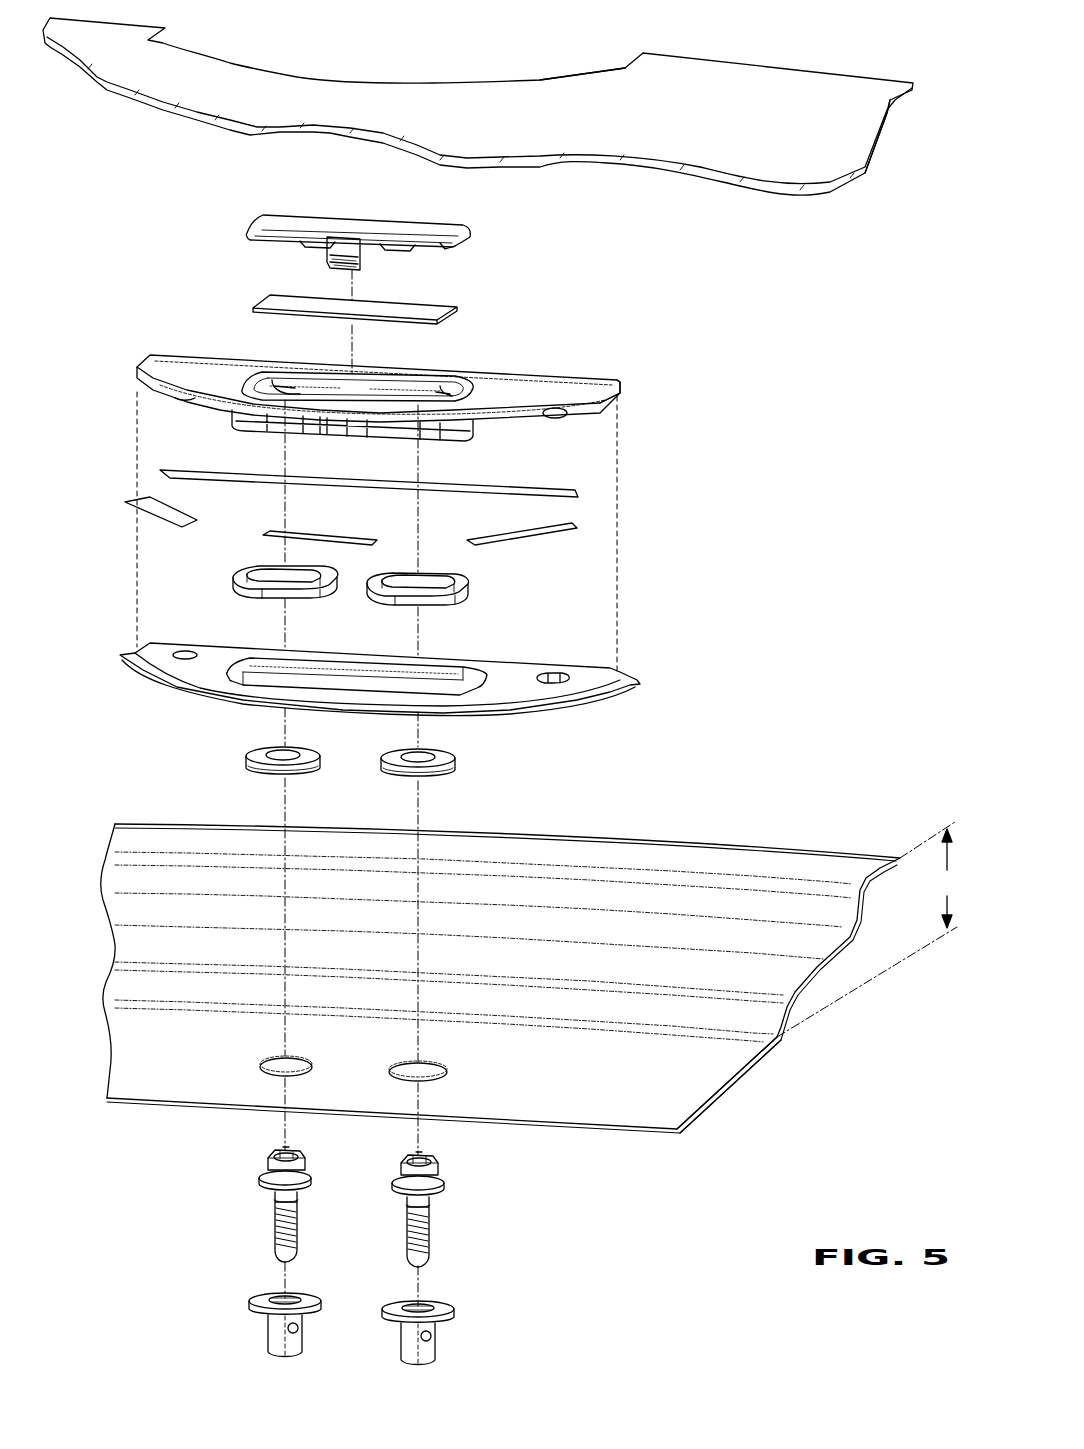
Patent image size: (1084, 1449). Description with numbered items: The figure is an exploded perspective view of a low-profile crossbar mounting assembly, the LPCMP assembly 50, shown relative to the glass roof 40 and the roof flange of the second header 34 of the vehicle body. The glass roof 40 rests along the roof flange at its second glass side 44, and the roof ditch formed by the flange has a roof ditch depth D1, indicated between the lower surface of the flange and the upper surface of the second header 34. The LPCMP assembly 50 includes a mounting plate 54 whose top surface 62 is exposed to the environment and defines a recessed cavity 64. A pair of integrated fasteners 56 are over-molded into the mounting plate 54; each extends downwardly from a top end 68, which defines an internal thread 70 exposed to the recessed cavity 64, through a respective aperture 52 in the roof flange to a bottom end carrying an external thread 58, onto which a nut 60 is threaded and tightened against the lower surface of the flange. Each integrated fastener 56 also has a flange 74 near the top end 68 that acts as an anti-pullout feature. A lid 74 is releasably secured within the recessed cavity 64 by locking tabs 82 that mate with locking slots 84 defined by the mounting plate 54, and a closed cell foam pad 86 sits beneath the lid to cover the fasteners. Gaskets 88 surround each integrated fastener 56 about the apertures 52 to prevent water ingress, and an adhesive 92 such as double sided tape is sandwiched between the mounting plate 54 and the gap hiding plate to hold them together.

The second header 34 is at (780, 857).
The glass roof 40 is at (712, 98).
The second glass side 44 is at (835, 70).
The LPCMP assembly 50 is at (662, 362).
The aperture 52 is at (262, 1067).
The mounting plate 54 is at (520, 372).
The integrated fastener 56 is at (274, 1215).
The external thread 58 is at (274, 1235).
The nut 60 is at (268, 1357).
The top surface 62 is at (200, 368).
The recessed cavity 64 is at (440, 386).
The top end 68 is at (410, 1156).
The internal thread 70 is at (278, 1154).
The flange / lid 74 is at (253, 220).
The locking tabs 82 is at (327, 258).
The locking slots 84 is at (355, 440).
The pad 86 is at (440, 306).
The gasket 88 is at (470, 588).
The adhesive 92 is at (580, 496).
The roof ditch depth D1 is at (868, 929).